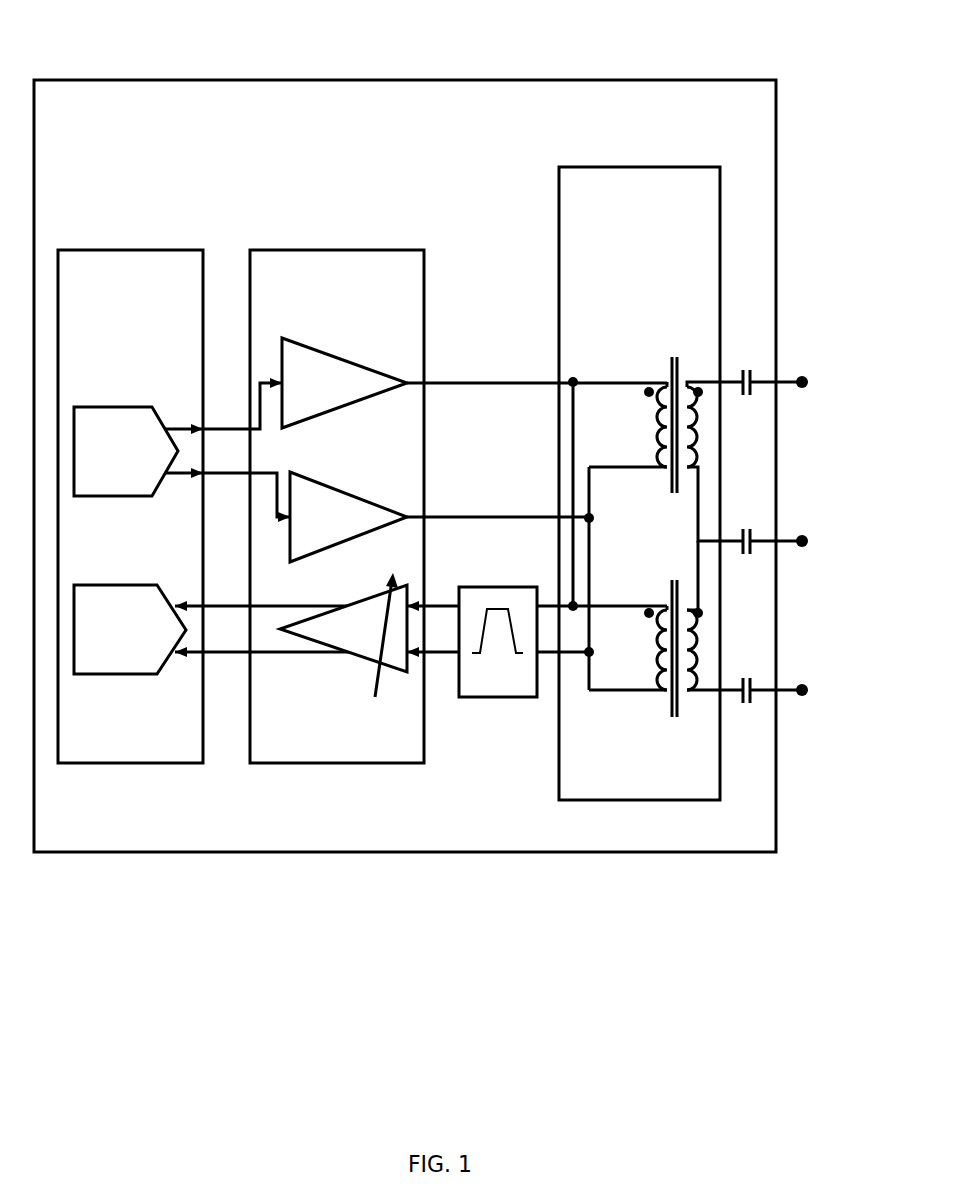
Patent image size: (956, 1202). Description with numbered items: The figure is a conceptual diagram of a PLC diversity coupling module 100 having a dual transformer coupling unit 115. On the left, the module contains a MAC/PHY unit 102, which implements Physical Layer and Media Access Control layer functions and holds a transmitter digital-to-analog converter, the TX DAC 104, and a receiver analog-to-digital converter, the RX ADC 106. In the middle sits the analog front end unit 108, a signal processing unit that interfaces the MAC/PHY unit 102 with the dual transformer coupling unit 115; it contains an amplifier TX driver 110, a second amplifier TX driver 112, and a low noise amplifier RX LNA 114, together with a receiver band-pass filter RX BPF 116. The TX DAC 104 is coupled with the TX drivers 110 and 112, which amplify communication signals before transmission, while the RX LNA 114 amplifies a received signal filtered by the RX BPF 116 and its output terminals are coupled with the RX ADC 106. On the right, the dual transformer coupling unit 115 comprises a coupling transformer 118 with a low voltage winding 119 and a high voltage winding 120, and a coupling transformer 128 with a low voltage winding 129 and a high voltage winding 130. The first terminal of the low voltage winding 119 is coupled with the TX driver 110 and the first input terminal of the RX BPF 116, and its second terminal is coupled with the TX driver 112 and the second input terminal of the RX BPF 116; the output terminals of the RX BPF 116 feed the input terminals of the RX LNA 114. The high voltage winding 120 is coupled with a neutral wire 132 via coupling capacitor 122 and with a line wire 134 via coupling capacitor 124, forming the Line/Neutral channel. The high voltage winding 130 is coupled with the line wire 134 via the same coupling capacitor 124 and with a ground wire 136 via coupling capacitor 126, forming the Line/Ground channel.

The PLC diversity coupling module 100 is at (217, 80).
The MAC/PHY unit 102 is at (101, 250).
The TX DAC 104 is at (112, 497).
The RX ADC 106 is at (112, 676).
The analog front end unit 108 is at (311, 250).
The TX driver 110 is at (383, 375).
The TX driver 112 is at (383, 502).
The RX LNA 114 is at (348, 672).
The dual transformer coupling unit 115 is at (647, 167).
The RX BPF 116 is at (500, 698).
The coupling transformer 118 is at (671, 361).
The low voltage winding 119 is at (658, 430).
The high voltage winding 120 is at (695, 373).
The coupling capacitor 122 is at (747, 369).
The coupling capacitor 124 is at (749, 556).
The coupling capacitor 126 is at (751, 706).
The coupling transformer 128 is at (670, 714).
The low voltage winding 129 is at (663, 655).
The high voltage winding 130 is at (695, 692).
The neutral wire 132 is at (806, 390).
The line wire 134 is at (806, 549).
The ground wire 136 is at (806, 698).